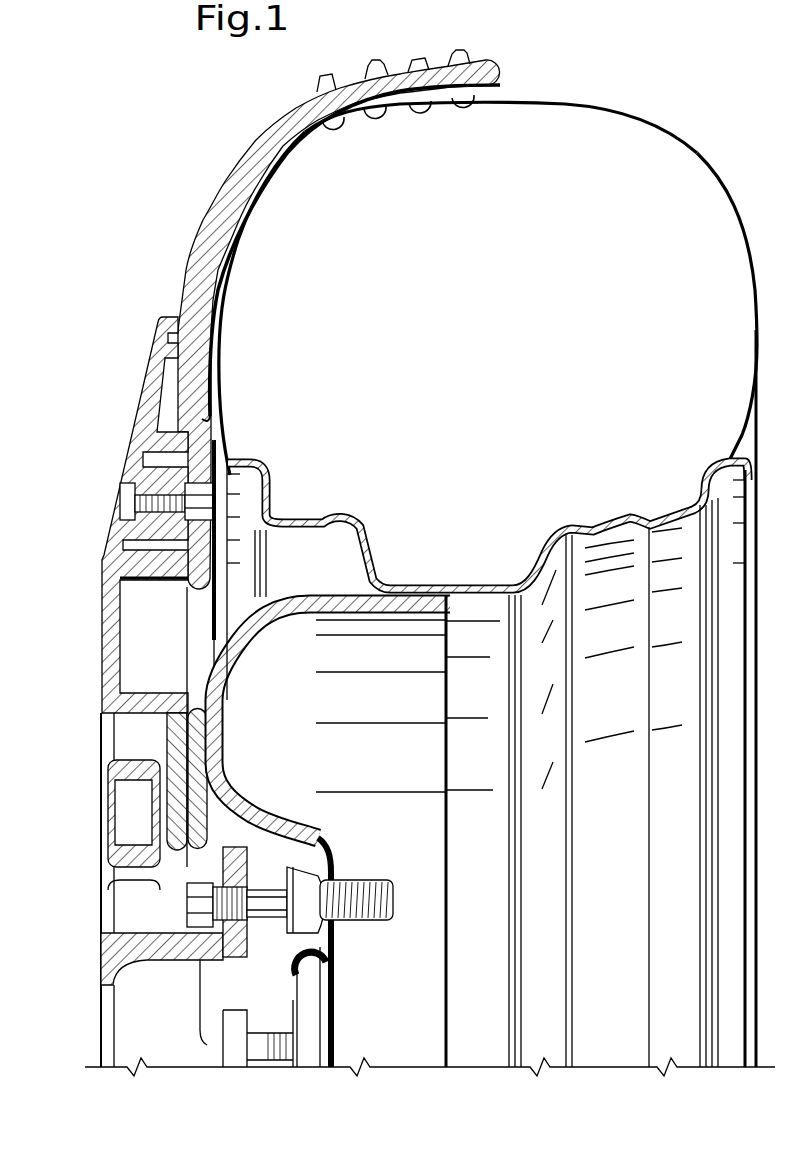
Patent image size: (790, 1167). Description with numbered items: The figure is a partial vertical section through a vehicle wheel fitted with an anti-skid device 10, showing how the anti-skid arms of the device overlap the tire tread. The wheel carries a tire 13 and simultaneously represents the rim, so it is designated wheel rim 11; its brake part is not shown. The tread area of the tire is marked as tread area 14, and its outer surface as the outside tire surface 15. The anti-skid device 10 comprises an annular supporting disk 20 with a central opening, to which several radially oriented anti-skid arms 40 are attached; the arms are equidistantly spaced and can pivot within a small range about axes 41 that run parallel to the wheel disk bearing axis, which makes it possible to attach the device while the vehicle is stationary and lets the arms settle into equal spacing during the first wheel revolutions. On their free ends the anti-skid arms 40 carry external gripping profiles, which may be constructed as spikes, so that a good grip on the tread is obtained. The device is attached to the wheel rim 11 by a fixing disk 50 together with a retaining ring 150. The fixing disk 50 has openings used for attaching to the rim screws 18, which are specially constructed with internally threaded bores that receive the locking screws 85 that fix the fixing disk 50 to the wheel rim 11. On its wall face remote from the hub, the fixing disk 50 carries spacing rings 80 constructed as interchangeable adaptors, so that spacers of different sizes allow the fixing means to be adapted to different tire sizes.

The anti-skid device 10 is at (137, 352).
The wheel rim 11 is at (207, 693).
The tire 13 is at (617, 152).
The tread area 14 is at (558, 105).
The outside tire surface 15 is at (220, 278).
The rim screw 18 is at (309, 993).
The supporting disk 20 is at (113, 538).
The anti-skid arm 40 is at (240, 212).
The pivot axis 41 is at (133, 482).
The fixing disk 50 is at (193, 817).
The spacing ring 80 is at (247, 857).
The locking screw 85 is at (228, 906).
The retaining ring 150 is at (118, 770).